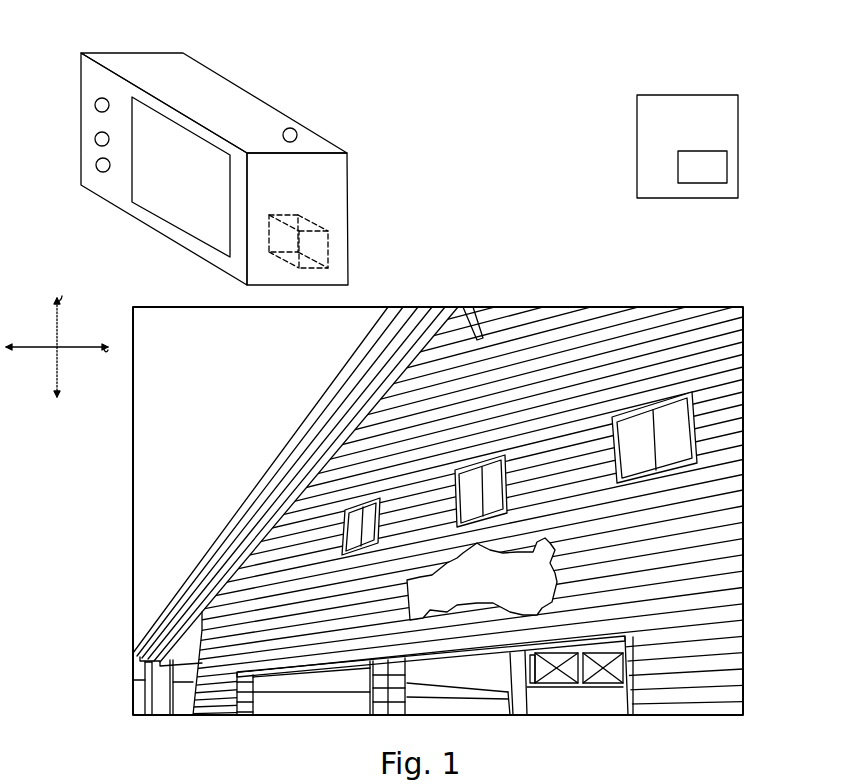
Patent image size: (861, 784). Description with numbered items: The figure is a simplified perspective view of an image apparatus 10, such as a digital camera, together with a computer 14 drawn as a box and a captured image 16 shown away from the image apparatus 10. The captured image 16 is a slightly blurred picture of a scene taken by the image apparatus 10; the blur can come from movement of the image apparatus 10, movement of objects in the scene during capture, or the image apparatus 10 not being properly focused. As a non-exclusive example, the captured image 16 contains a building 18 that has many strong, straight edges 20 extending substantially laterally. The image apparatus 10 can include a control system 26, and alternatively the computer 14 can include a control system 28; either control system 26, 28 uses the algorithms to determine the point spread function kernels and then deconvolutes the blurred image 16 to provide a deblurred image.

The image apparatus 10 is at (244, 144).
The control system 26 is at (320, 249).
The computer 14 is at (689, 134).
The control system 28 is at (714, 181).
The captured image 16 is at (98, 416).
The building 18 is at (755, 347).
The straight edges 20 is at (730, 502).